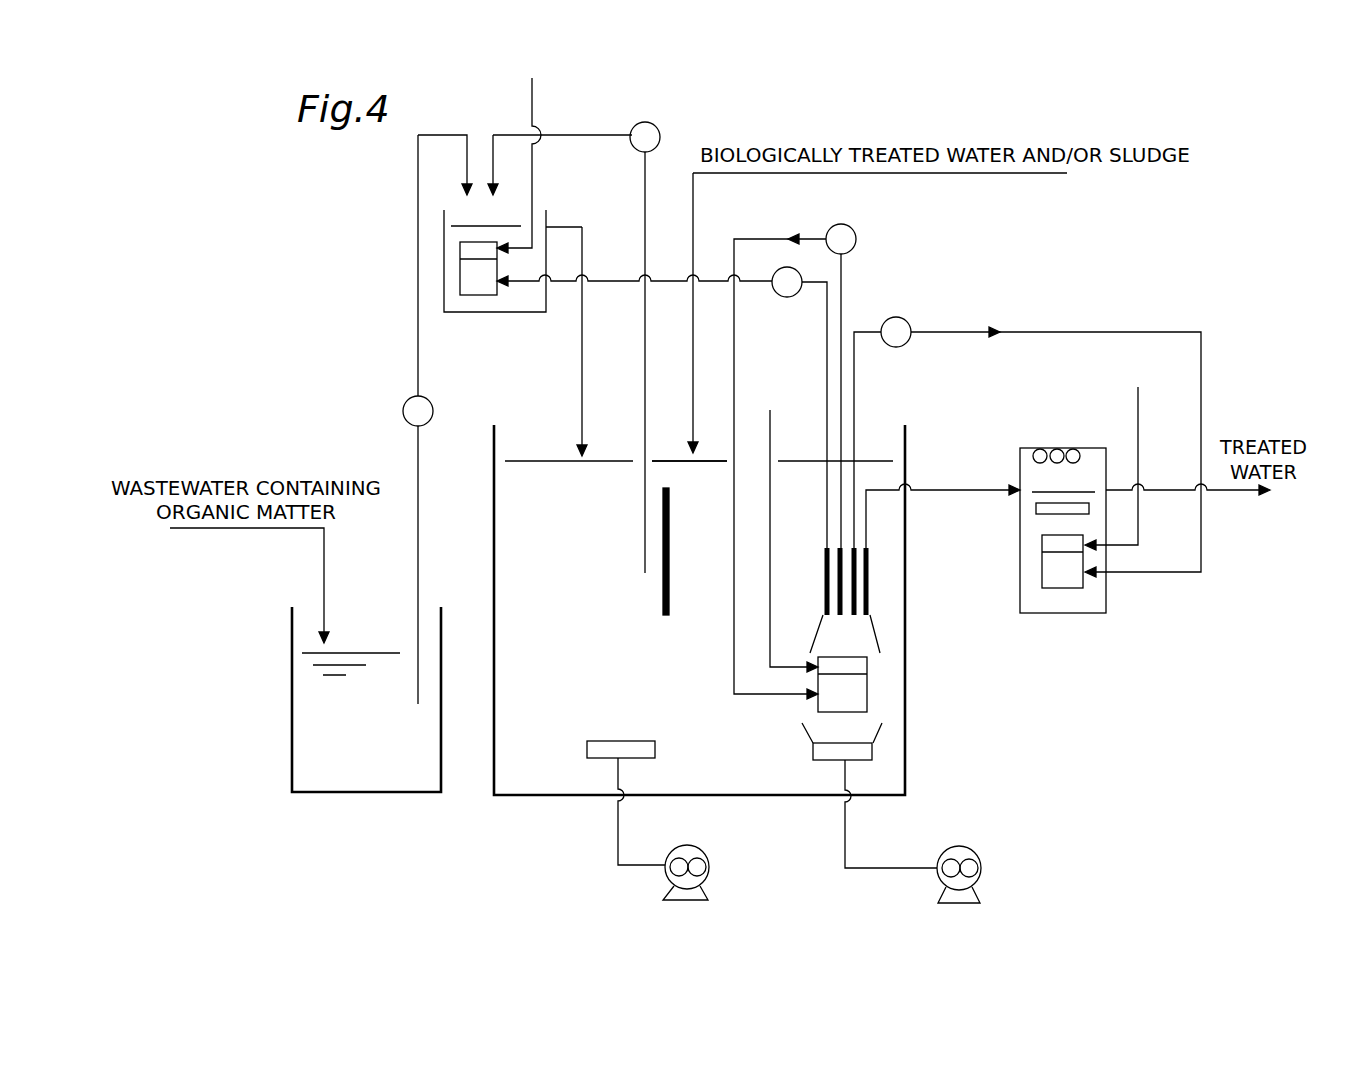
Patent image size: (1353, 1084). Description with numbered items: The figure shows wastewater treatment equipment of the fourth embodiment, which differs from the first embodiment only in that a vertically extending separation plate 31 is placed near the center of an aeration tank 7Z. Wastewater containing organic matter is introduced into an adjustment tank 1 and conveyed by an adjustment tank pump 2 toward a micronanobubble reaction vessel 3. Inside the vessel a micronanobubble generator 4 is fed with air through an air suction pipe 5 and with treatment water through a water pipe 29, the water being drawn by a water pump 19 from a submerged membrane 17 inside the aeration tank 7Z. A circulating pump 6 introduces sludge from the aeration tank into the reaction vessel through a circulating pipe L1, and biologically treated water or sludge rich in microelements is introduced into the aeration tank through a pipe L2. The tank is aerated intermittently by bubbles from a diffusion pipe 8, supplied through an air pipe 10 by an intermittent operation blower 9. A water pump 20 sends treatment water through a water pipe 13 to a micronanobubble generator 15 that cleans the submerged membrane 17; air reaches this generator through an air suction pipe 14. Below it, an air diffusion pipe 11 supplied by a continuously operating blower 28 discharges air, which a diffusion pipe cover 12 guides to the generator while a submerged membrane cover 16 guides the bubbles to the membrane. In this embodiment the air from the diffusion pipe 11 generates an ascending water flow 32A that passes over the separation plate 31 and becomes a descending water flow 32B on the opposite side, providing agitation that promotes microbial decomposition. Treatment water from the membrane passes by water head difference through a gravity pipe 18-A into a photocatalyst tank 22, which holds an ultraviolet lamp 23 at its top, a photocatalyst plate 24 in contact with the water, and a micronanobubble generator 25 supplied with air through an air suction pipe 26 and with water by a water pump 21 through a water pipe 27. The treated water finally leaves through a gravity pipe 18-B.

The adjustment tank 1 is at (313, 792).
The adjustment tank pump 2 is at (403, 411).
The micronanobubble reaction vessel 3 is at (444, 283).
The micronanobubble generator 4 is at (462, 249).
The air suction pipe 5 is at (532, 108).
The circulating pump 6 is at (656, 126).
The circulating pipe L1 is at (606, 136).
The pipe L2 is at (693, 228).
The aeration tank 7Z is at (523, 795).
The diffusion pipe 8 is at (640, 741).
The intermittent operation blower 9 is at (700, 853).
The air pipe 10 is at (618, 850).
The diffusion pipe 11 is at (860, 762).
The diffusion pipe cover 12 is at (878, 733).
The water pipe 13 is at (734, 650).
The air suction pipe 14 is at (772, 440).
The micronanobubble generator 15 is at (867, 689).
The submerged membrane cover 16 is at (812, 636).
The submerged membrane 17 is at (870, 570).
The gravity pipe 18-A is at (945, 490).
The gravity pipe 18-B is at (1171, 490).
The water pump 19 is at (786, 298).
The water pump 20 is at (851, 228).
The water pump 21 is at (904, 320).
The photocatalyst tank 22 is at (1106, 603).
The ultraviolet lamp 23 is at (1038, 449).
The photocatalyst plate 24 is at (1036, 509).
The micronanobubble generator 25 is at (1057, 588).
The air suction pipe 26 is at (1152, 418).
The water pipe 27 is at (1201, 394).
The blower 28 is at (976, 853).
The water pipe 29 is at (609, 281).
The separation plate 31 is at (652, 600).
The ascending water flow 32A is at (708, 491).
The descending water flow 32B is at (606, 512).